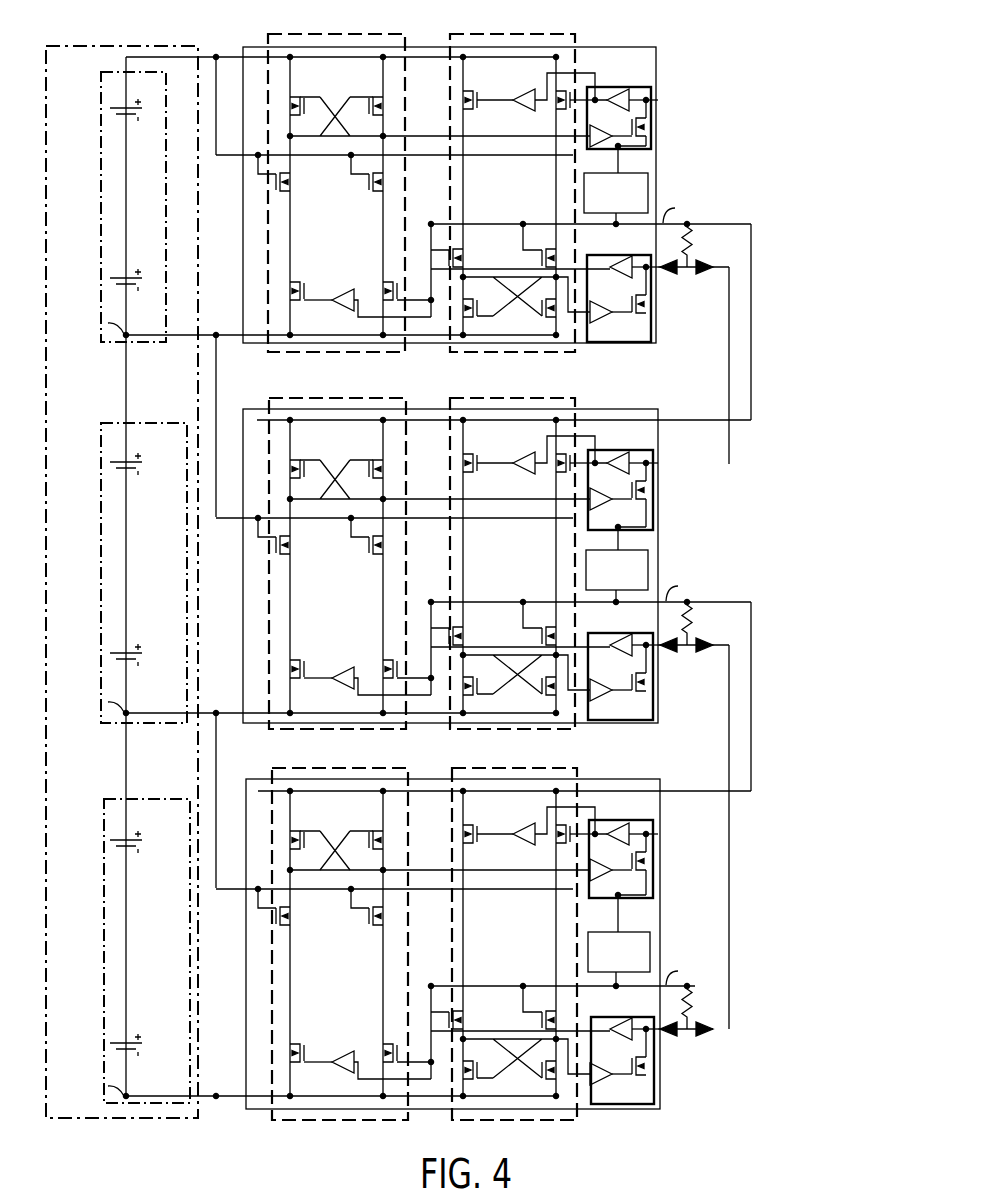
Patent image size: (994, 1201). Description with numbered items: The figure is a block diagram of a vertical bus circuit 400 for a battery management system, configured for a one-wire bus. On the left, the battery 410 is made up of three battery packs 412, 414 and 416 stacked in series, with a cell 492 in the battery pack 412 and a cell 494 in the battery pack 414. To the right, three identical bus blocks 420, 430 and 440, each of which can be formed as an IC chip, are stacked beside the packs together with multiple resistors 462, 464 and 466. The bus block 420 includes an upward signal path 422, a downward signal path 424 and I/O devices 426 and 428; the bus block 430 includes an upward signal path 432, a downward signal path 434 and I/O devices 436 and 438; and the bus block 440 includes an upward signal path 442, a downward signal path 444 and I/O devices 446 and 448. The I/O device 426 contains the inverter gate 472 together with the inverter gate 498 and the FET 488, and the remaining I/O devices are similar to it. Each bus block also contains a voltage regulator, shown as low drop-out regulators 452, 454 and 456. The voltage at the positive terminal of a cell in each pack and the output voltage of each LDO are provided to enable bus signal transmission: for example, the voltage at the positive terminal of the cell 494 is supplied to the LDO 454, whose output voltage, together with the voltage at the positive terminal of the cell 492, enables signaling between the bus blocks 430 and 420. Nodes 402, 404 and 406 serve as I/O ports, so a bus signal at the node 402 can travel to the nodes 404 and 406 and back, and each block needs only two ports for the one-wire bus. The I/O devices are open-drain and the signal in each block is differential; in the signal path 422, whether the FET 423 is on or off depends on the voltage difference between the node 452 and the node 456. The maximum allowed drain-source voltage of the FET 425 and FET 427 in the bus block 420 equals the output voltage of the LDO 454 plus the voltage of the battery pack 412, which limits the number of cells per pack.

The vertical bus circuit 400 is at (742, 100).
The node 402 is at (693, 1033).
The node 404 is at (689, 654).
The node 406 is at (688, 276).
The battery 410 is at (119, 46).
The battery pack 412 is at (104, 890).
The battery pack 414 is at (101, 465).
The battery pack 416 is at (101, 107).
The bus block 420 is at (626, 779).
The upward signal path 422 is at (371, 768).
The FET 423 is at (368, 823).
The downward signal path 424 is at (534, 768).
The FET 425 is at (292, 1040).
The I/O device 426 is at (606, 1017).
The FET 427 is at (388, 1053).
The I/O device 428 is at (606, 822).
The bus block 430 is at (621, 409).
The upward signal path 432 is at (369, 398).
The downward signal path 434 is at (533, 398).
The I/O device 436 is at (603, 635).
The I/O device 438 is at (604, 452).
The bus block 440 is at (621, 47).
The upward signal path 442 is at (369, 34).
The downward signal path 444 is at (533, 34).
The I/O device 446 is at (603, 255).
The I/O device 448 is at (603, 87).
The LDO voltage regulator / node 452 is at (652, 934).
The LDO voltage regulator 454 is at (648, 554).
The LDO voltage regulator / node 456 is at (648, 176).
The resistor 462 is at (694, 1000).
The resistor 464 is at (694, 625).
The resistor 466 is at (693, 247).
The inverter gate 472 is at (634, 1040).
The FET 488 is at (649, 1070).
The cell 492 is at (132, 840).
The cell 494 is at (130, 462).
The inverter gate 498 is at (608, 1084).